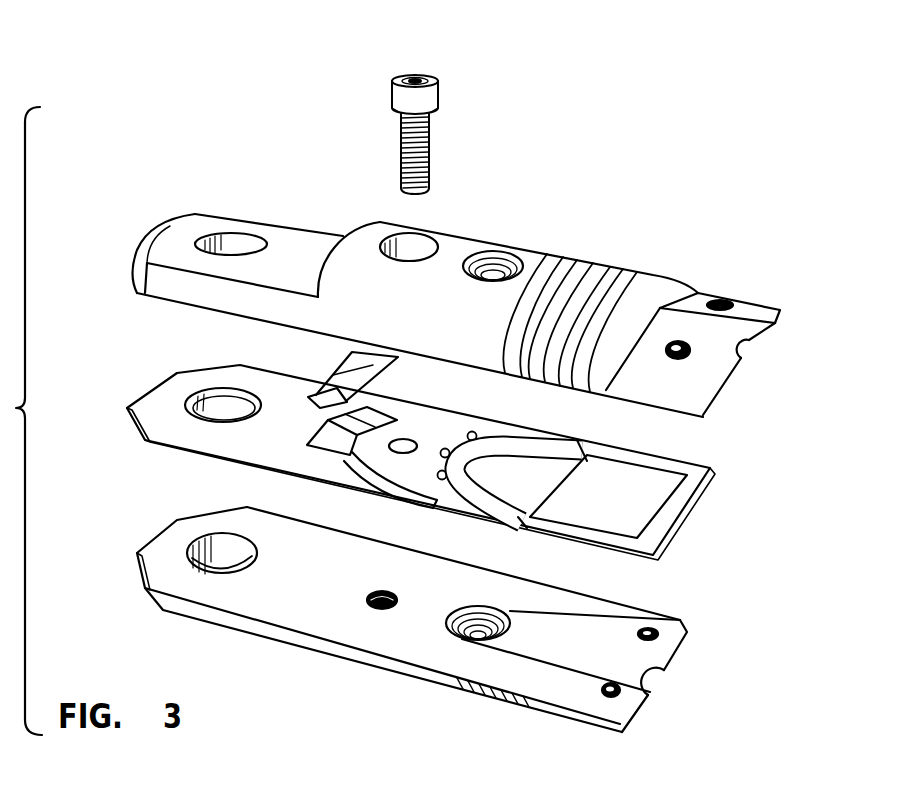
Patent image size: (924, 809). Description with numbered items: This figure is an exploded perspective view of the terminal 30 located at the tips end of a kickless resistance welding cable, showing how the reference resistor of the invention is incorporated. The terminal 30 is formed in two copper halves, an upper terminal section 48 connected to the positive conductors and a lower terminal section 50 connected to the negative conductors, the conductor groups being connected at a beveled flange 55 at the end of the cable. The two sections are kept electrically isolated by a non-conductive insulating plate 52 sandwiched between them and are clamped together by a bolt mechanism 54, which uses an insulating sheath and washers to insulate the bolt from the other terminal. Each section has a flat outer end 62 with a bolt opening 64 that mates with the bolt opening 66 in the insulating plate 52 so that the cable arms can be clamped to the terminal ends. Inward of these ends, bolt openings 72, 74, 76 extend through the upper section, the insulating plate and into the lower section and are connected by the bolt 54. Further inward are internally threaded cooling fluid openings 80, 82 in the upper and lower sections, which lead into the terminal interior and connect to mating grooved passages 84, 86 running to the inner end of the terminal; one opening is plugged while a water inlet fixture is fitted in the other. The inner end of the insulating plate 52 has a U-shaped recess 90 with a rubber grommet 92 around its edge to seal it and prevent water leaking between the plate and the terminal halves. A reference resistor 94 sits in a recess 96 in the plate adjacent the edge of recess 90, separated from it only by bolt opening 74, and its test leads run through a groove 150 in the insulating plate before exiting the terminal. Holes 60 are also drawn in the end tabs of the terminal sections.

The terminal 30 is at (457, 431).
The upper terminal section 48 is at (500, 248).
The lower terminal section 50 is at (408, 641).
The insulating plate 52 is at (412, 471).
The bolt mechanism 54 is at (437, 79).
The beveled flange 55 is at (652, 512).
The tab hole 60 is at (723, 298).
The flat outer end 62 is at (283, 238).
The bolt opening 64 is at (237, 237).
The bolt opening 66 is at (192, 398).
The bolt opening 72 is at (420, 235).
The bolt opening 74 is at (408, 440).
The bolt opening 76 is at (383, 610).
The cooling fluid opening 80 is at (460, 226).
The cooling fluid opening 82 is at (456, 636).
The grooved passage 84 is at (743, 352).
The grooved passage 86 is at (655, 677).
The U-shaped recess 90 is at (520, 481).
The rubber grommet 92 is at (530, 523).
The reference resistor 94 is at (330, 388).
The recess 96 is at (340, 447).
The groove 150 is at (348, 478).